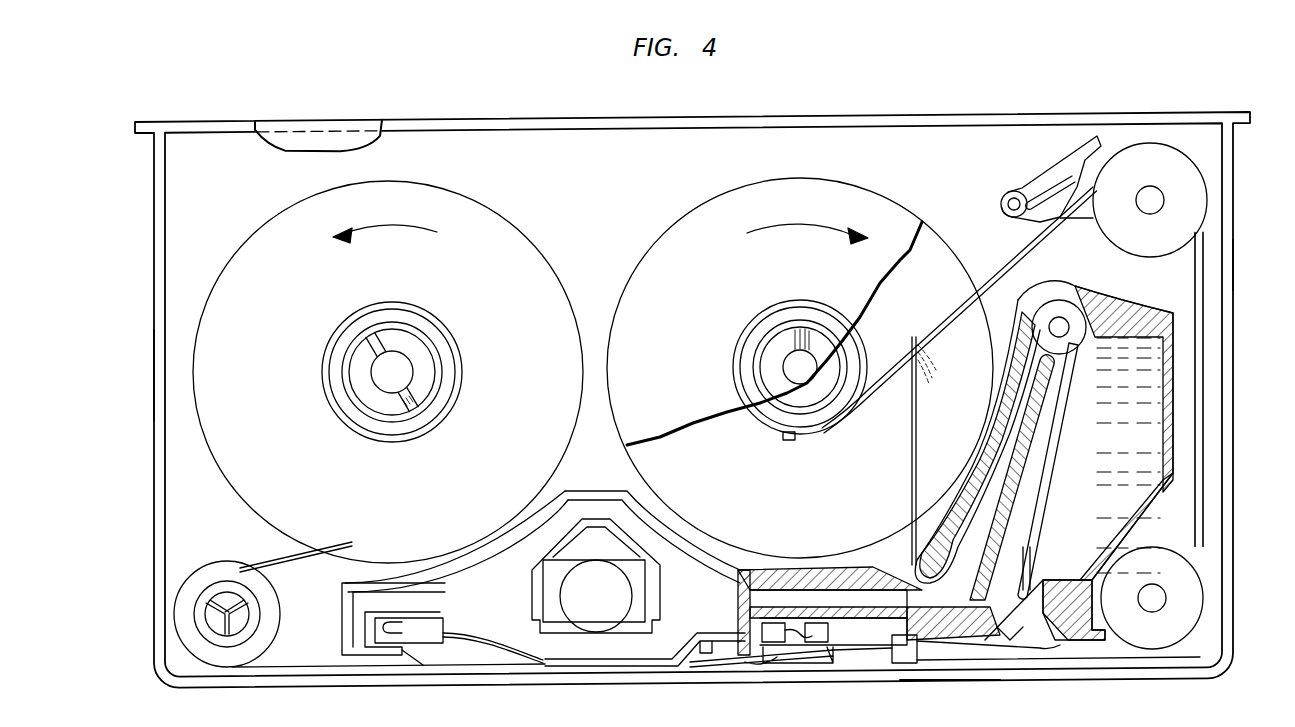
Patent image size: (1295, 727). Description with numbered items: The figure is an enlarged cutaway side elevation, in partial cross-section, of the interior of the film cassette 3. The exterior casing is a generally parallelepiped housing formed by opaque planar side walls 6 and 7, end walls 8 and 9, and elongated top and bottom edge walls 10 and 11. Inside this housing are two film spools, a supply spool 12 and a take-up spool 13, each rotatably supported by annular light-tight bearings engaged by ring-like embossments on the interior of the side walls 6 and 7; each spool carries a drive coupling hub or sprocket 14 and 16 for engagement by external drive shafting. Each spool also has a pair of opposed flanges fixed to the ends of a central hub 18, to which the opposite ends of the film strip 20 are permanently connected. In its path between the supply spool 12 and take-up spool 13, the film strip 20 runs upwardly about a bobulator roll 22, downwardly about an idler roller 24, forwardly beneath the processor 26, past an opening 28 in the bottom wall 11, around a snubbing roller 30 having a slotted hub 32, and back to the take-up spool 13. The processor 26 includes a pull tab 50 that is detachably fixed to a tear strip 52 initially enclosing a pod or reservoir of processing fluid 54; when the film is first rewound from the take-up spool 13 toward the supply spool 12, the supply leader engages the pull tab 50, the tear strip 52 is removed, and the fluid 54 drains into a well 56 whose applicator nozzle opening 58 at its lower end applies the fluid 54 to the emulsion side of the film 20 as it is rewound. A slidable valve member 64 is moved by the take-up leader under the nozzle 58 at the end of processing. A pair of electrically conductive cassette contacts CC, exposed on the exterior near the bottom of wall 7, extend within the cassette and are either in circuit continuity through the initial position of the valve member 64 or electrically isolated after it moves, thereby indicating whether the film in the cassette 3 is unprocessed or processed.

The cassette 3 is at (1247, 320).
The side wall 6 is at (368, 138).
The side wall 7 is at (592, 172).
The end wall 8 is at (148, 378).
The end wall 9 is at (1230, 262).
The top edge wall 10 is at (893, 118).
The bottom edge wall 11 is at (931, 678).
The supply spool 12 is at (880, 213).
The take-up spool 13 is at (530, 270).
The drive coupling hub or sprocket 14 is at (790, 355).
The drive coupling hub or sprocket 16 is at (420, 382).
The central hub 18 is at (773, 418).
The film strip 20 is at (1017, 258).
The bobulator roll 22 is at (1185, 192).
The idler roller 24 is at (1185, 610).
The processor 26 is at (1110, 298).
The opening 28 is at (647, 672).
The snubbing roller 30 is at (240, 657).
The slotted hub 32 is at (226, 595).
The pull tab 50 is at (915, 445).
The tear strip 52 is at (1073, 448).
The processing fluid 54 is at (1124, 480).
The well 56 is at (1020, 520).
The applicator nozzle opening 58 is at (1003, 630).
The slidable valve member 64 is at (848, 655).
The cassette contacts CC is at (818, 627).